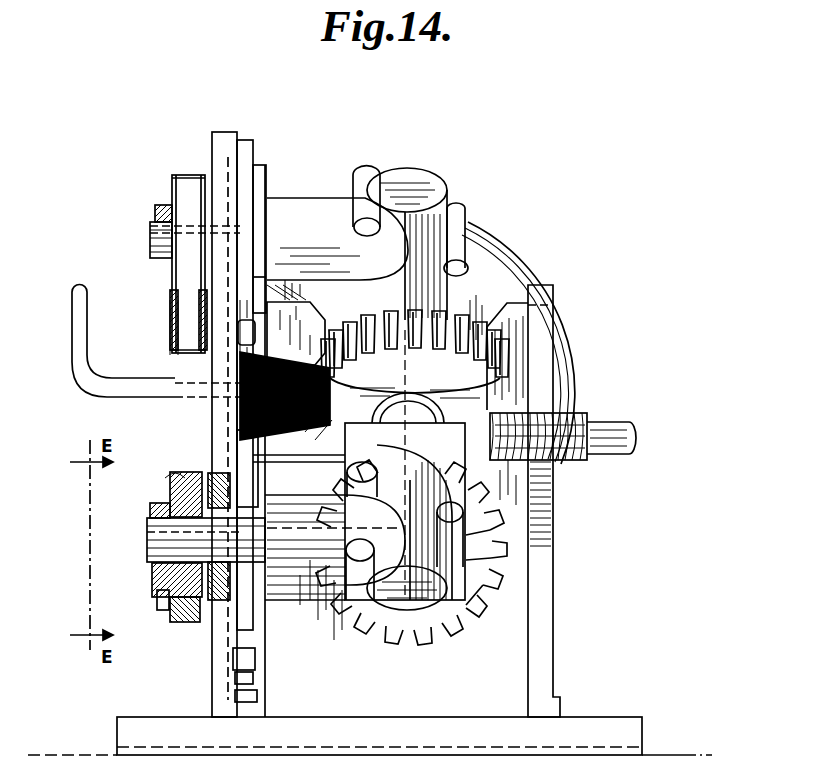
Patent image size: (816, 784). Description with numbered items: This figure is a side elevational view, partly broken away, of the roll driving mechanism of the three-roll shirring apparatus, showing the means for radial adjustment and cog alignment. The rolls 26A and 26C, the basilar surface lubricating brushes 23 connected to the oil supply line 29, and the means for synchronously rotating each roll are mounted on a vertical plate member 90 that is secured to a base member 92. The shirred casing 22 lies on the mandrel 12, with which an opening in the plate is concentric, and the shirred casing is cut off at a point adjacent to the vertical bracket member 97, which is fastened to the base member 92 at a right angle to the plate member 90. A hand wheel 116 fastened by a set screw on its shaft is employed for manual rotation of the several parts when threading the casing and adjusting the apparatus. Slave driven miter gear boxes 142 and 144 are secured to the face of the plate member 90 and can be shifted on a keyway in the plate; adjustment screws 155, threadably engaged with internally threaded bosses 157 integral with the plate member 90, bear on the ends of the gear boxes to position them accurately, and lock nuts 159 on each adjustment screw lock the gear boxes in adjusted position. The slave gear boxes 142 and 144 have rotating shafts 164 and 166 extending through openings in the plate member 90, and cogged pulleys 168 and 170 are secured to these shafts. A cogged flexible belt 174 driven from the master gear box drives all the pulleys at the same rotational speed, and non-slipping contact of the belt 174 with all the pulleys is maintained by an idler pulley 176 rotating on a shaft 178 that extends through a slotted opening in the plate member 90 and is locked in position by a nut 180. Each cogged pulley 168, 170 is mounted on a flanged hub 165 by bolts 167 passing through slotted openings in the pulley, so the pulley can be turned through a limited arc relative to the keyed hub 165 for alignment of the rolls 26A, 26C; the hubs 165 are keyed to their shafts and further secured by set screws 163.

The vertical plate member 90 is at (226, 140).
The base member 92 is at (578, 724).
The vertical bracket member 97 is at (545, 620).
The hand wheel 116 is at (512, 270).
The cogged pulley 170 is at (176, 185).
The rotating shaft 166 is at (150, 240).
The set screw 163 is at (160, 210).
The oil supply line 29 is at (88, 387).
The idler pulley 176 is at (172, 353).
The cogged flexible belt 174 is at (186, 400).
The basilar surface lubricating brushes 23 is at (238, 408).
The cogged pulley 168 is at (171, 480).
The rotating shaft 164 is at (156, 545).
The flanged hub 165 is at (152, 575).
The bolts 167 is at (161, 608).
The slave driven miter gear box 144 is at (445, 185).
The nut 180 is at (250, 338).
The shaft 178 is at (281, 396).
The roll 26C is at (488, 363).
The roll 26A is at (490, 548).
The shirred casing 22 is at (580, 415).
The mandrel 12 is at (622, 430).
The slave driven miter gear box 142 is at (384, 612).
The internally threaded bosses 157 is at (256, 662).
The lock nuts 159 is at (254, 679).
The adjustment screws 155 is at (258, 698).